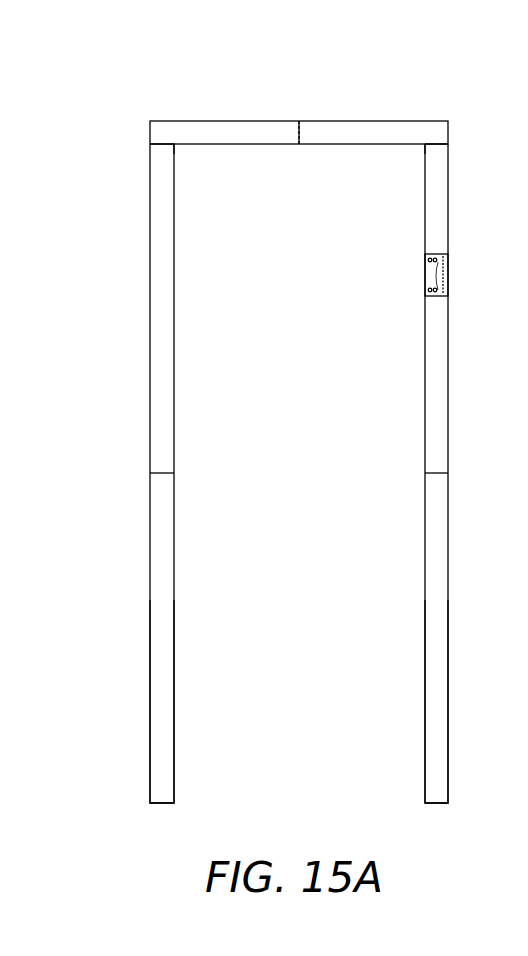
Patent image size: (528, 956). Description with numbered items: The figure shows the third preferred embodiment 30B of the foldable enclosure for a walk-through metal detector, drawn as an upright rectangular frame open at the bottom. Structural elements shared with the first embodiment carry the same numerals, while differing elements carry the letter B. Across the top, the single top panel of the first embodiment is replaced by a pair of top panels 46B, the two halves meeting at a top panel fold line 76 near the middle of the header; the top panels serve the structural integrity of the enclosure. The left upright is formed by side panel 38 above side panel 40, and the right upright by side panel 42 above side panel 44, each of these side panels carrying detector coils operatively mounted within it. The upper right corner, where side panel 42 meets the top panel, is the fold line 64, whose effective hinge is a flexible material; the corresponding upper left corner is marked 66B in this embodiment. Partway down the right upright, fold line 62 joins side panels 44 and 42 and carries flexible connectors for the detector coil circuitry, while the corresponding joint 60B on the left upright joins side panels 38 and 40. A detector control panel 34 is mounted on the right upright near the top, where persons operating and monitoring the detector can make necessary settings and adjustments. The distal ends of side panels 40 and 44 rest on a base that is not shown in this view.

The third preferred embodiment 30B is at (252, 59).
The top panels 46B is at (228, 121).
The top panel fold line 76 is at (299, 121).
The left corner joint 66B is at (176, 146).
The fold line 64 is at (424, 146).
The side panel 42 is at (442, 199).
The detector control panel 34 is at (446, 260).
The side panel 38 is at (160, 300).
The left jamb joint 60B is at (150, 473).
The fold line 62 is at (450, 473).
The side panel 40 is at (157, 606).
The side panel 44 is at (444, 604).